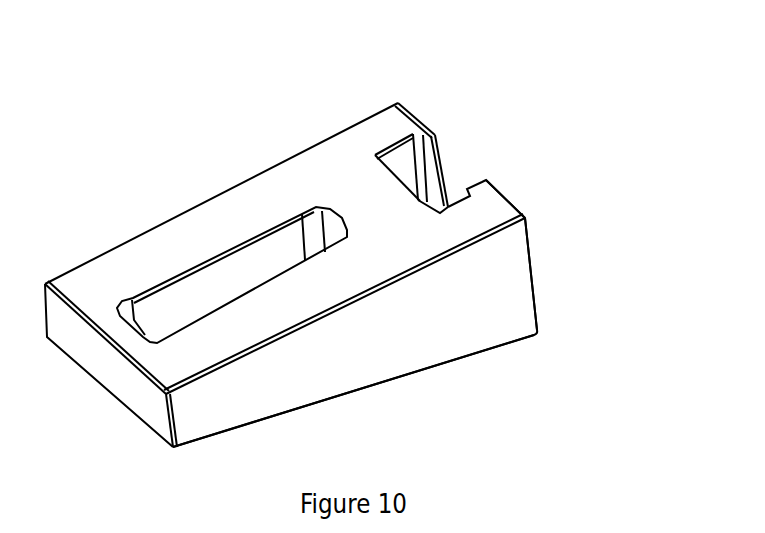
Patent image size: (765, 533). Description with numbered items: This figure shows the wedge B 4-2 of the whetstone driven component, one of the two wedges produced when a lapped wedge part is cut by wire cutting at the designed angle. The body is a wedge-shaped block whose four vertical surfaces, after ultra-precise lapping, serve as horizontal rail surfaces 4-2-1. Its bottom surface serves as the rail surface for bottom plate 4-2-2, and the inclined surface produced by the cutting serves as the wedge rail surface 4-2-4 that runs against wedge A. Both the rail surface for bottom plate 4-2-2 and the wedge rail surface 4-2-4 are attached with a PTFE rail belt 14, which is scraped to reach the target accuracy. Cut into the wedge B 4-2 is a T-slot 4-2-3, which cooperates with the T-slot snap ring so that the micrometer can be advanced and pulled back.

The wedge B 4-2 is at (104, 268).
The horizontal rail surface 4-2-1 is at (420, 315).
The rail surface for bottom plate 4-2-2 is at (330, 461).
The T-slot 4-2-3 is at (402, 163).
The wedge rail surface 4-2-4 is at (210, 215).
The PTFE rail belt 14 is at (492, 353).